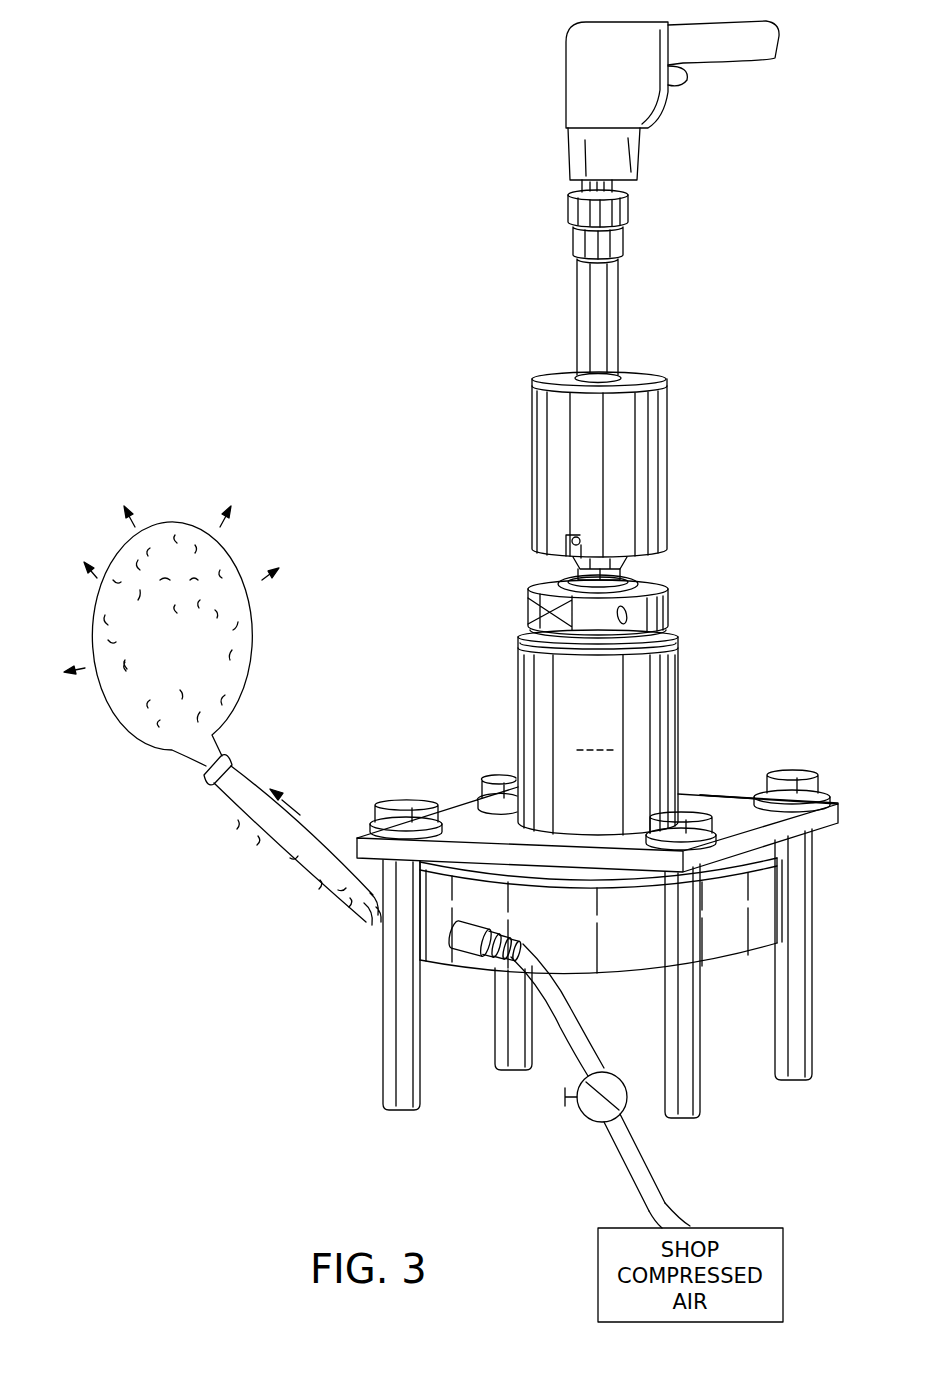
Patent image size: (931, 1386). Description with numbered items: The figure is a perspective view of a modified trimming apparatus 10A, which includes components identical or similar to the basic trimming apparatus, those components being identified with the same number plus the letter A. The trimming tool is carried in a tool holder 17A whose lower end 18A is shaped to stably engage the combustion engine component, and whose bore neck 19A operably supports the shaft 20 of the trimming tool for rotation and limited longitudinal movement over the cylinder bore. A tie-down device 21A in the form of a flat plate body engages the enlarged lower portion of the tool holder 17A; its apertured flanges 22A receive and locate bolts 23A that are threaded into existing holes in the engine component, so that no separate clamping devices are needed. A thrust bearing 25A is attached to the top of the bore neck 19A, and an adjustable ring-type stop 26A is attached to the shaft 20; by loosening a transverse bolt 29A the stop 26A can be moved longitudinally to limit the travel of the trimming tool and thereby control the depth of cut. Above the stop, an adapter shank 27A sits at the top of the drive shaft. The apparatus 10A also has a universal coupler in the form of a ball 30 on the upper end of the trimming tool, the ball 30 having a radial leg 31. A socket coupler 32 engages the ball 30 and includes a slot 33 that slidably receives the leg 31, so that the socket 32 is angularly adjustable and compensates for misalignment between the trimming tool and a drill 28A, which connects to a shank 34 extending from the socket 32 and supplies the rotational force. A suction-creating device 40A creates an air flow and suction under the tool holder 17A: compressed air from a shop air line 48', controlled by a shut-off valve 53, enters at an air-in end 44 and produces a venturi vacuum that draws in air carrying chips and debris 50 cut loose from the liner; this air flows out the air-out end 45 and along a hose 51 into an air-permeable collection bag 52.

The modified trimming apparatus 10A is at (345, 482).
The drill 28A is at (566, 100).
The shank 34 is at (620, 330).
The socket coupler 32 is at (667, 503).
The radial leg 31 is at (572, 540).
The slot 33 is at (573, 567).
The ball 30 is at (625, 566).
The adapter shank 27A is at (638, 580).
The adjustable ring-type stop 26A is at (509, 622).
The transverse bolt 29A is at (668, 612).
The thrust bearing 25A is at (636, 640).
The tool holder 17A is at (507, 708).
The bore neck 19A is at (680, 735).
The shaft 20 is at (595, 735).
The apertured flanges 22A is at (862, 807).
The tie-down device 21A is at (742, 781).
The bolts 23A is at (393, 801).
The end of tool holder 18A is at (772, 900).
The suction-creating device 40A is at (446, 976).
The air-out end 45 is at (381, 920).
The air-in end 44 is at (491, 956).
The shut-off valve 53 is at (602, 1122).
The shop air line 48' is at (637, 1171).
The air-permeable collection bag 52 is at (253, 636).
The hose 51 is at (266, 845).
The chips and debris 50 is at (188, 553).